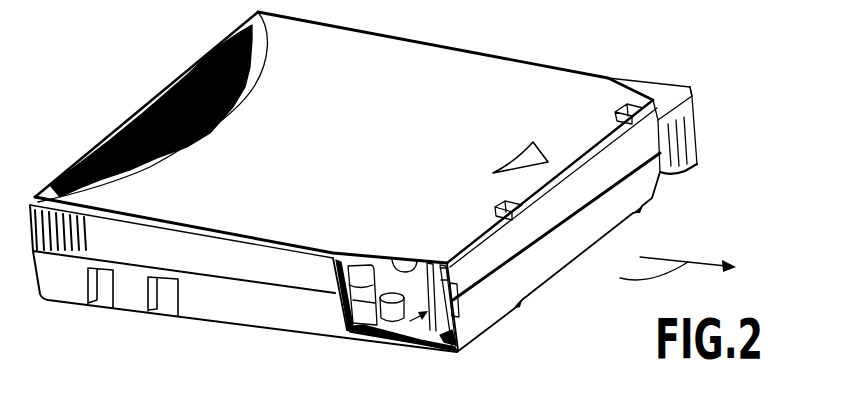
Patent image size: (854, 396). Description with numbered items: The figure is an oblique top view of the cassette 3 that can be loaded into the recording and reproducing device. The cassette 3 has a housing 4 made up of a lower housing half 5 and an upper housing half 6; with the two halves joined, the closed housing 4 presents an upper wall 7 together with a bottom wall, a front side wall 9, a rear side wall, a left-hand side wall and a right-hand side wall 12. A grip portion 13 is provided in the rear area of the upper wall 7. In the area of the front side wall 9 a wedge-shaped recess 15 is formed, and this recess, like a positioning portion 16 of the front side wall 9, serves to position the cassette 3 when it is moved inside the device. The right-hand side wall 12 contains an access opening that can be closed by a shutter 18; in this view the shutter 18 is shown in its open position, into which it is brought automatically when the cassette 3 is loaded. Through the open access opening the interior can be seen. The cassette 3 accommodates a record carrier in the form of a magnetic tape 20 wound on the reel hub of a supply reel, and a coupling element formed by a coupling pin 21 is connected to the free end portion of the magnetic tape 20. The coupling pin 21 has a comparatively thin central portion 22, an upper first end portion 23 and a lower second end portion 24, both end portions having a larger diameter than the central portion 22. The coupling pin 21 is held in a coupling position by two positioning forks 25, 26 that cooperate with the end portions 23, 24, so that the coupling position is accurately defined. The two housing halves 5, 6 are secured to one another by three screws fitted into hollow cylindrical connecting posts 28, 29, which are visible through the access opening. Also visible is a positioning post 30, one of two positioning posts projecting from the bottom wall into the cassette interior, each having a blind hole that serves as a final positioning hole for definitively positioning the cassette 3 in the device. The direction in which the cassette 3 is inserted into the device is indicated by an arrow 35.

The cassette 3 is at (700, 58).
The housing 4 is at (705, 118).
The lower housing half 5 is at (78, 312).
The upper housing half 6 is at (577, 42).
The upper wall 7 is at (453, 50).
The front side wall 9 is at (598, 224).
The right-hand side wall 12 is at (245, 290).
The grip portion 13 is at (80, 158).
The wedge-shaped recess 15 is at (676, 180).
The positioning portion 16 is at (520, 277).
The shutter 18 is at (345, 262).
The magnetic tape 20 is at (460, 302).
The coupling pin 21 is at (408, 325).
The central portion 22 is at (455, 283).
The upper first end portion 23 is at (413, 260).
The lower second end portion 24 is at (427, 353).
The positioning fork 25 is at (396, 262).
The positioning fork 26 is at (453, 323).
The hollow cylindrical connecting post 28 is at (365, 308).
The hollow cylindrical connecting post 29 is at (358, 268).
The positioning post 30 is at (390, 292).
The arrow 35 is at (672, 266).